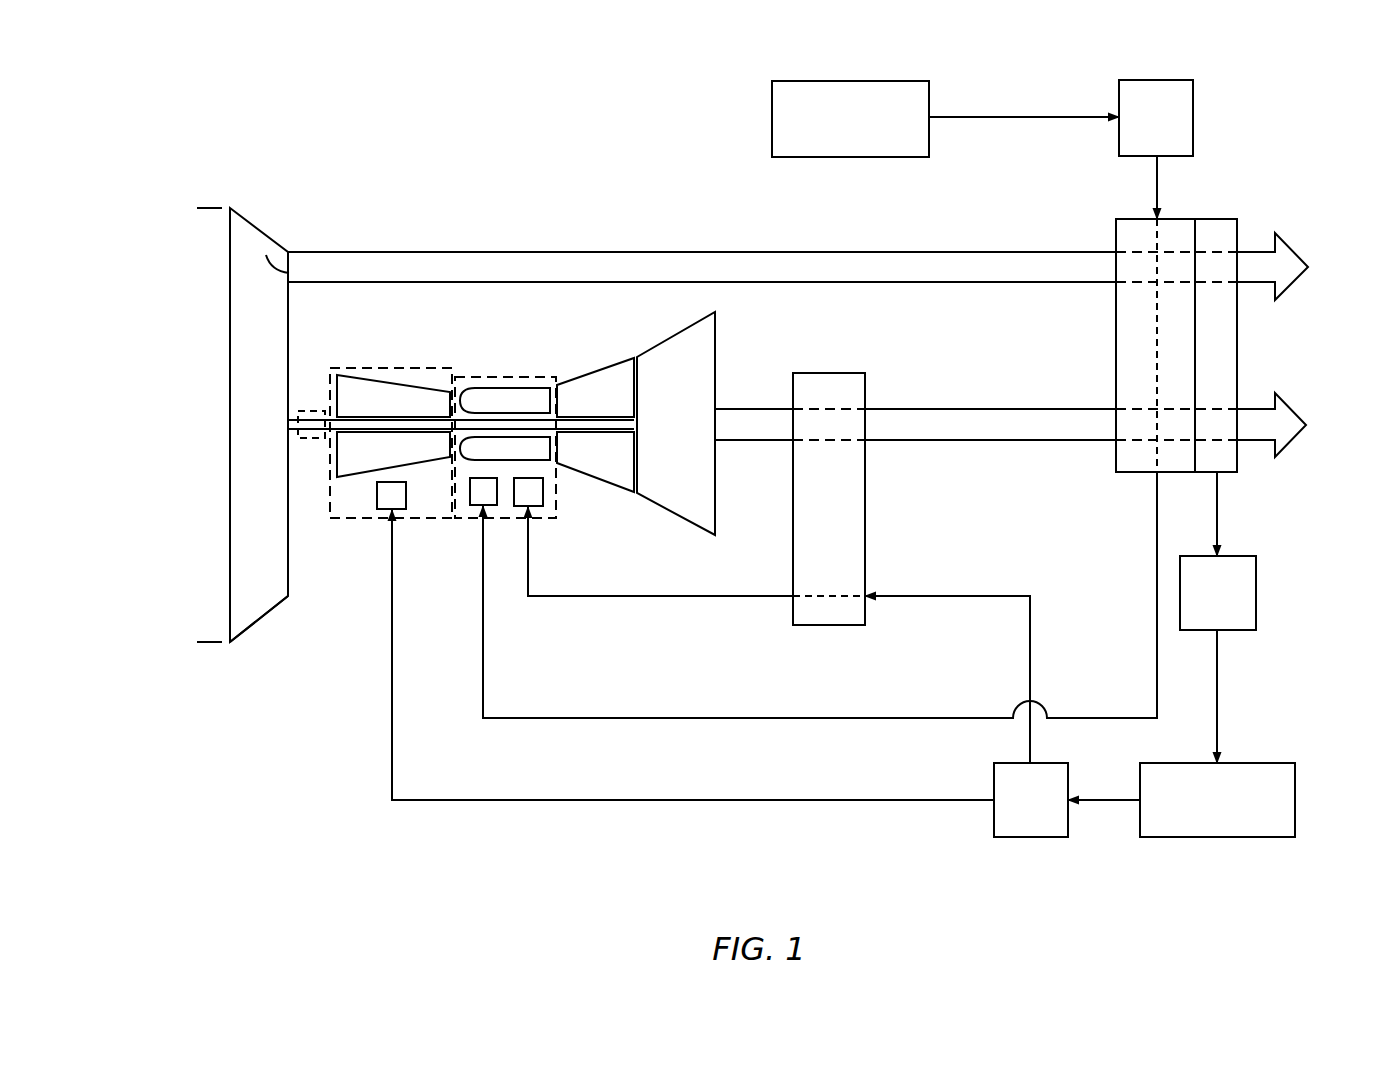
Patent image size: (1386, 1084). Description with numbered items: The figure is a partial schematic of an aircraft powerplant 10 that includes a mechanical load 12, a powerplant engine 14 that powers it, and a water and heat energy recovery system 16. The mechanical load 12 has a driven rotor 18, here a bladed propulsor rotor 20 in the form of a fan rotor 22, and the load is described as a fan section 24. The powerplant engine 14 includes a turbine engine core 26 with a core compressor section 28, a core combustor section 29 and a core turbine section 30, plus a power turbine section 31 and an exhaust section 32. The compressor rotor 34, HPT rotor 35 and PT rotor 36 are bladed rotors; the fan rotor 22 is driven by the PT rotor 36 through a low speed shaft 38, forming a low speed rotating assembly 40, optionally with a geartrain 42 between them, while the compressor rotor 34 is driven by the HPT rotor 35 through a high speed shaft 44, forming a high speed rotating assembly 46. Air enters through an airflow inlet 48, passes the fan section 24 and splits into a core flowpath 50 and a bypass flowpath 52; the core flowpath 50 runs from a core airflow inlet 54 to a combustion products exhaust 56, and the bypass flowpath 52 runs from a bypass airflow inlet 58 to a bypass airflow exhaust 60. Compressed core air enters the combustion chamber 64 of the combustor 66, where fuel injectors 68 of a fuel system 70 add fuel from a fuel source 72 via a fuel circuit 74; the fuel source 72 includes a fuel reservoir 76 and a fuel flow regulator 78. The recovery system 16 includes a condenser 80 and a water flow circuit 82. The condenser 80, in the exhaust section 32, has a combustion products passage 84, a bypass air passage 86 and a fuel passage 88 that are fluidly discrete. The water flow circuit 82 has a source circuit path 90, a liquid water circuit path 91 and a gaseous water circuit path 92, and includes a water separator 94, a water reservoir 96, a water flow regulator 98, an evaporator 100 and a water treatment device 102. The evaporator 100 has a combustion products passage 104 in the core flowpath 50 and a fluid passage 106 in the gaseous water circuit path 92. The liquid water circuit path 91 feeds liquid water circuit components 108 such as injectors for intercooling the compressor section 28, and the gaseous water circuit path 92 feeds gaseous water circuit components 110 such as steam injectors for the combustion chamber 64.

The powerplant 10 is at (165, 108).
The mechanical load 12 is at (255, 192).
The powerplant engine 14 is at (470, 305).
The water and heat energy recovery system 16 is at (340, 818).
The driven rotor 18 is at (262, 628).
The bladed propulsor rotor 20 is at (259, 619).
The fan rotor 22 is at (259, 619).
The fan section 24 is at (259, 230).
The turbine engine core 26 is at (515, 335).
The core compressor section 28 is at (378, 335).
The core combustor section 29 is at (466, 350).
The core turbine section 30 is at (605, 352).
The power turbine section 31 is at (683, 310).
The exhaust section 32 is at (918, 310).
The compressor rotor 34 is at (355, 375).
The HPT rotor 35 is at (584, 385).
The PT rotor 36 is at (716, 330).
The low speed shaft 38 is at (607, 430).
The low speed rotating assembly 40 is at (740, 358).
The geartrain 42 is at (301, 440).
The high speed shaft 44 is at (544, 440).
The high speed rotating assembly 46 is at (627, 500).
The airflow inlet 48 is at (197, 222).
The core flowpath 50 is at (975, 409).
The bypass flowpath 52 is at (983, 265).
The core airflow inlet 54 is at (300, 388).
The combustion products exhaust 56 is at (1298, 390).
The bypass airflow inlet 58 is at (266, 255).
The bypass airflow exhaust 60 is at (1295, 242).
The combustion chamber 64 is at (503, 393).
The combustor 66 is at (525, 392).
The fuel injectors 68 is at (480, 505).
The fuel system 70 is at (1218, 92).
The fuel source 72 is at (750, 100).
The fuel circuit 74 is at (912, 718).
The fuel reservoir 76 is at (850, 119).
The fuel flow regulator 78 is at (1156, 118).
The condenser 80 is at (1108, 346).
The water flow circuit 82 is at (572, 828).
The combustion products passage 84 is at (1140, 462).
The bypass air passage 86 is at (1143, 250).
The fuel passage 88 is at (1148, 325).
The source circuit path 90 is at (1245, 690).
The liquid water circuit path 91 is at (693, 812).
The gaseous water circuit path 92 is at (968, 578).
The water separator 94 is at (1238, 338).
The water reservoir 96 is at (1217, 800).
The water flow regulator 98 is at (1031, 800).
The evaporator 100 is at (866, 513).
The water treatment device 102 is at (1218, 593).
The combustion products passage 104 is at (850, 409).
The fluid passage 106 is at (813, 600).
The liquid water circuit components 108 is at (377, 500).
The gaseous water circuit components 110 is at (535, 505).